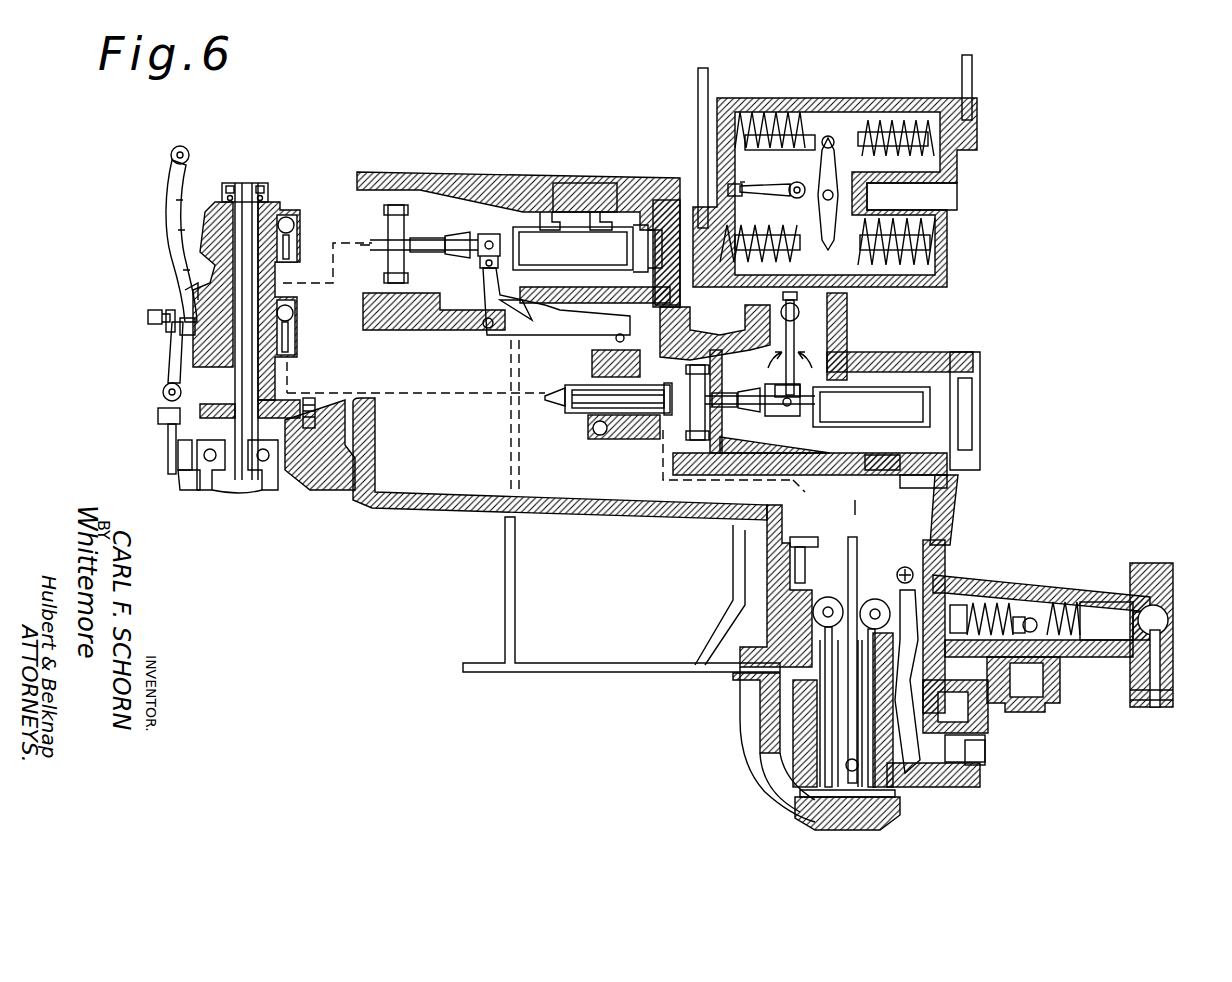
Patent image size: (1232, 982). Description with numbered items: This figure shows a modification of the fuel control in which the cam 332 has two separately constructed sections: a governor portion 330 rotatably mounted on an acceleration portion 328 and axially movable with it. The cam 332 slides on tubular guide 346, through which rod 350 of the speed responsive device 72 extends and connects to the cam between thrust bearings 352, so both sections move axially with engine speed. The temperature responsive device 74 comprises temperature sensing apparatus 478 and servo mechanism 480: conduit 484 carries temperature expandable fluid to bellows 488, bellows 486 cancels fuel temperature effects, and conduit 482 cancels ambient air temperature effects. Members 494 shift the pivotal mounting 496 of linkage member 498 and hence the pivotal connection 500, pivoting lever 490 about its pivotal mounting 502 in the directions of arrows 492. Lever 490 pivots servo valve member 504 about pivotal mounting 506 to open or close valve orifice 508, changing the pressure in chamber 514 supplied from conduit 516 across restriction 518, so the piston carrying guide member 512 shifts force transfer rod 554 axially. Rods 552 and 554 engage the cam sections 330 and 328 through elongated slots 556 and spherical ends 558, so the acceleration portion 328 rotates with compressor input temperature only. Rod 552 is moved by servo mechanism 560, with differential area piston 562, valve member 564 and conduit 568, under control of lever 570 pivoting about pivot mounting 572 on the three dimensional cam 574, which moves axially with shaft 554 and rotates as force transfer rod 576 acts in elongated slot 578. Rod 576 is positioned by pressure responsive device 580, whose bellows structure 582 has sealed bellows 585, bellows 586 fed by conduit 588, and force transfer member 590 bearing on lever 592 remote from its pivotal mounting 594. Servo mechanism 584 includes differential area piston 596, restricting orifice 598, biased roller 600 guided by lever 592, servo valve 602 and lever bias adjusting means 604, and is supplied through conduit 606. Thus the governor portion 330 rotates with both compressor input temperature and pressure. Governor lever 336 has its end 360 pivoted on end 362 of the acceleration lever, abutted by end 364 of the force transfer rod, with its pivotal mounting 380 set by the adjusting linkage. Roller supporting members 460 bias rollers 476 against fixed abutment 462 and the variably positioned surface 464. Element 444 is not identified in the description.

The speed responsive device 72 is at (296, 503).
The temperature responsive device 74 is at (921, 352).
The acceleration portion of the cam 328 is at (178, 362).
The governor portion of the cam 330 is at (200, 243).
The cam 332 is at (190, 295).
The governor lever 336 is at (172, 190).
The tubular guide 346 is at (282, 388).
The rod 350 is at (228, 390).
The thrust bearings 352 is at (262, 185).
The end of the governor lever 360 is at (180, 320).
The end of the acceleration lever 362 is at (190, 340).
The end of the force transfer rod 364 is at (148, 317).
The pivotal mounting of the governor lever 380 is at (172, 156).
The nut 444 is at (165, 420).
The roller supporting members 460 is at (205, 480).
The fixed abutment 462 is at (262, 492).
The variably positioned surface 464 is at (170, 445).
The rollers 476 is at (192, 458).
The temperature sensing apparatus 478 is at (835, 140).
The servo mechanism 480 is at (873, 482).
The conduit 482 is at (708, 78).
The conduit 484 is at (965, 68).
The bellows 486 is at (815, 229).
The bellows 488 is at (935, 112).
The lever 490 is at (800, 322).
The arrows 492 is at (810, 355).
The members 494 is at (888, 272).
The pivotal mounting of the linkage member 496 is at (868, 198).
The linkage member 498 is at (740, 182).
The pivotal connection 500 is at (800, 184).
The pivotal mounting of the lever 502 is at (785, 140).
The servo valve member 504 is at (782, 395).
The pivotal mounting for the valve member 506 is at (804, 400).
The valve orifice 508 is at (804, 412).
The guide member 512 is at (722, 430).
The chamber 514 is at (907, 403).
The conduit 516 is at (790, 488).
The restriction 518 is at (945, 470).
The force transfer rod 552 is at (368, 242).
The force transfer rod 554 is at (399, 394).
The elongated slots 556 is at (290, 216).
The spherical ends 558 is at (290, 345).
The servo mechanism 560 is at (538, 175).
The differential area piston 562 is at (604, 272).
The valve member 564 is at (490, 235).
The conduit 568 is at (515, 358).
The lever 570 is at (540, 330).
The pivot mounting 572 is at (460, 333).
The three dimensional cam 574 is at (615, 378).
The force transfer rod 576 is at (868, 500).
The elongated slot 578 is at (595, 428).
The pressure responsive device 580 is at (958, 570).
The bellows structure 582 is at (1032, 590).
The servo mechanism 584 is at (765, 768).
The sealed bellows 585 is at (1010, 595).
The bellows 586 is at (1082, 605).
The conduit 588 is at (1155, 692).
The force transfer member 590 is at (865, 598).
The lever 592 is at (910, 775).
The pivotal mounting 594 is at (905, 565).
The differential area piston 596 is at (823, 792).
The restricting orifice 598 is at (768, 736).
The biased roller 600 is at (848, 597).
The servo valve 602 is at (1008, 712).
The lever bias adjusting means 604 is at (972, 765).
The conduit 606 is at (545, 666).